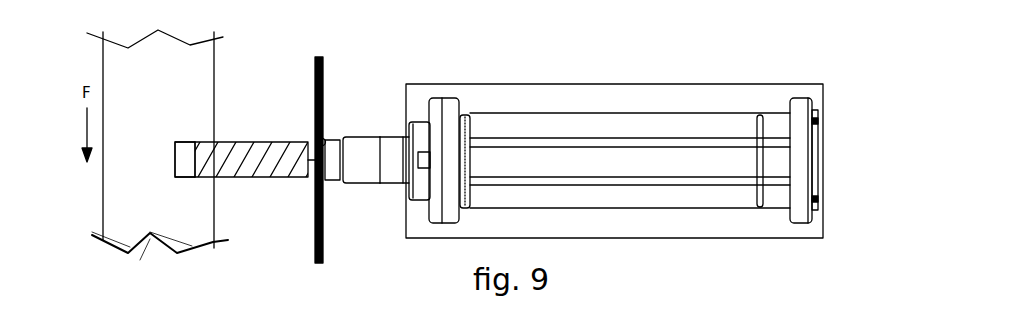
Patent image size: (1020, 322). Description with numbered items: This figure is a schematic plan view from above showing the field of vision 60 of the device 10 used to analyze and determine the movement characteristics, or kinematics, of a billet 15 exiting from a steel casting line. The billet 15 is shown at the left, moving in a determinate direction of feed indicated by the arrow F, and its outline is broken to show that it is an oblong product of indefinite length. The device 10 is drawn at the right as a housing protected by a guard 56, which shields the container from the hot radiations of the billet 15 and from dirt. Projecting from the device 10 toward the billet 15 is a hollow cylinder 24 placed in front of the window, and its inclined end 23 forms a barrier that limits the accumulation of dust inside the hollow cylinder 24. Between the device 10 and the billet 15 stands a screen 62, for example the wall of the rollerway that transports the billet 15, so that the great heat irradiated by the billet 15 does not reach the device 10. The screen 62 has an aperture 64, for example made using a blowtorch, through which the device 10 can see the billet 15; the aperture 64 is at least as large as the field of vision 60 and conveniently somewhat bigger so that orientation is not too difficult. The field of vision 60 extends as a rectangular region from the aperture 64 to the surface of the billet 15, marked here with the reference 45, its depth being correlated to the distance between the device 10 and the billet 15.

The device 10 is at (672, 62).
The billet 15 is at (148, 66).
The inclined end 23 is at (366, 135).
The hollow cylinder 24 is at (398, 172).
The rod end 45 is at (178, 159).
The guard 56 is at (515, 100).
The field of vision 60 is at (257, 120).
The screen 62 is at (320, 56).
The aperture 64 is at (324, 138).